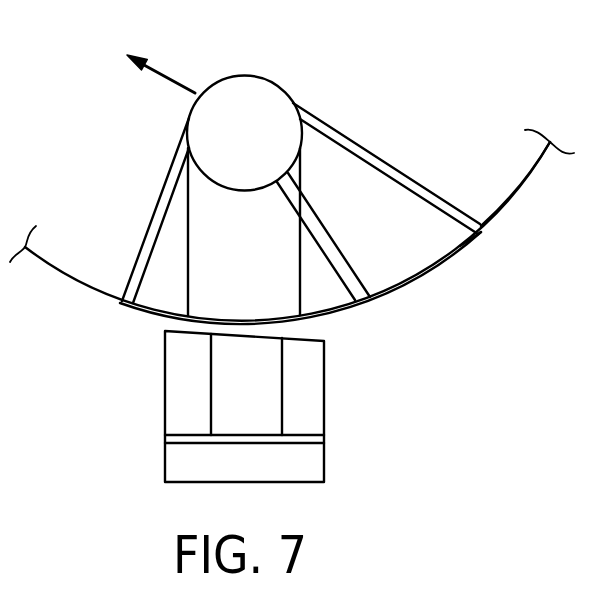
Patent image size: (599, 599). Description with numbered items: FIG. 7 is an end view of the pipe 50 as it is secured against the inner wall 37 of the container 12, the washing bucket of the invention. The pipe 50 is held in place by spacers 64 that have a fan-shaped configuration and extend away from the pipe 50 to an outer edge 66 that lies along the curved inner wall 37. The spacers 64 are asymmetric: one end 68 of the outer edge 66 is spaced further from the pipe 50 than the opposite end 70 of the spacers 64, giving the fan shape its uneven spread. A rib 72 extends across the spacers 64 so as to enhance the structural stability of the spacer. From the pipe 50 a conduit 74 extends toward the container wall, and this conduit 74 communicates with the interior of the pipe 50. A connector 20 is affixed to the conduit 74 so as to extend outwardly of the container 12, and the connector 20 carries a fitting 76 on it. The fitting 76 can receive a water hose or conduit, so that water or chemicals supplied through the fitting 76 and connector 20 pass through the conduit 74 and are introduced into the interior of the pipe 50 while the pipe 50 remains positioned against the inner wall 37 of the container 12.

The container 12 is at (63, 275).
The inner wall 37 is at (513, 195).
The pipe 50 is at (258, 75).
The spacers 64 is at (365, 146).
The outer edge 66 is at (425, 268).
The end of the outer edge 68 is at (475, 238).
The opposite end of the spacers 70 is at (119, 298).
The rib 72 is at (318, 222).
The conduit 74 is at (227, 257).
The connector 20 is at (313, 387).
The fitting 76 is at (324, 450).